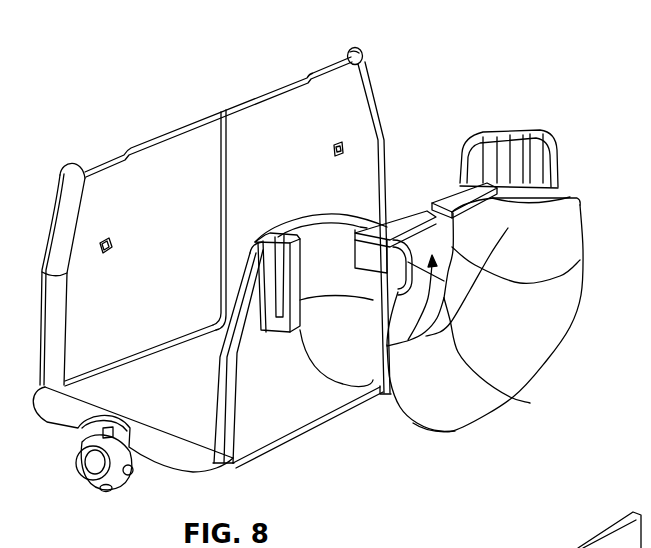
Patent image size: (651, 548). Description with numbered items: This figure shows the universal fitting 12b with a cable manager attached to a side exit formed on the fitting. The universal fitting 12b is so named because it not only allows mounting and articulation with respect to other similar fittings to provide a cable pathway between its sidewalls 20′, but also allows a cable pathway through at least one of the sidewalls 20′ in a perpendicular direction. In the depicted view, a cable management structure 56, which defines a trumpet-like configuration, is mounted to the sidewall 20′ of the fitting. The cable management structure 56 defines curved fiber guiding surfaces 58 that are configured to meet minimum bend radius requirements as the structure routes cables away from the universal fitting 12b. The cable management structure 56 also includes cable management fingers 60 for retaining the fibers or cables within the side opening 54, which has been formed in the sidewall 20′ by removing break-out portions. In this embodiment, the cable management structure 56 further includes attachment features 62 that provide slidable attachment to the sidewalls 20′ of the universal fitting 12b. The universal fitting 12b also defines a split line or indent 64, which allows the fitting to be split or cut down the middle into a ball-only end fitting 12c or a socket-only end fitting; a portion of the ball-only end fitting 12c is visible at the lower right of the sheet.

The universal fitting 12b is at (212, 78).
The ball-only end fitting 12c is at (538, 547).
The sidewall 20′ is at (303, 407).
The side opening 54 is at (530, 403).
The cable management structure 56 is at (433, 450).
The curved fiber guiding surfaces 58 is at (543, 317).
The cable management fingers 60 is at (448, 191).
The attachment features 62 is at (530, 163).
The split line or indent 64 is at (222, 163).